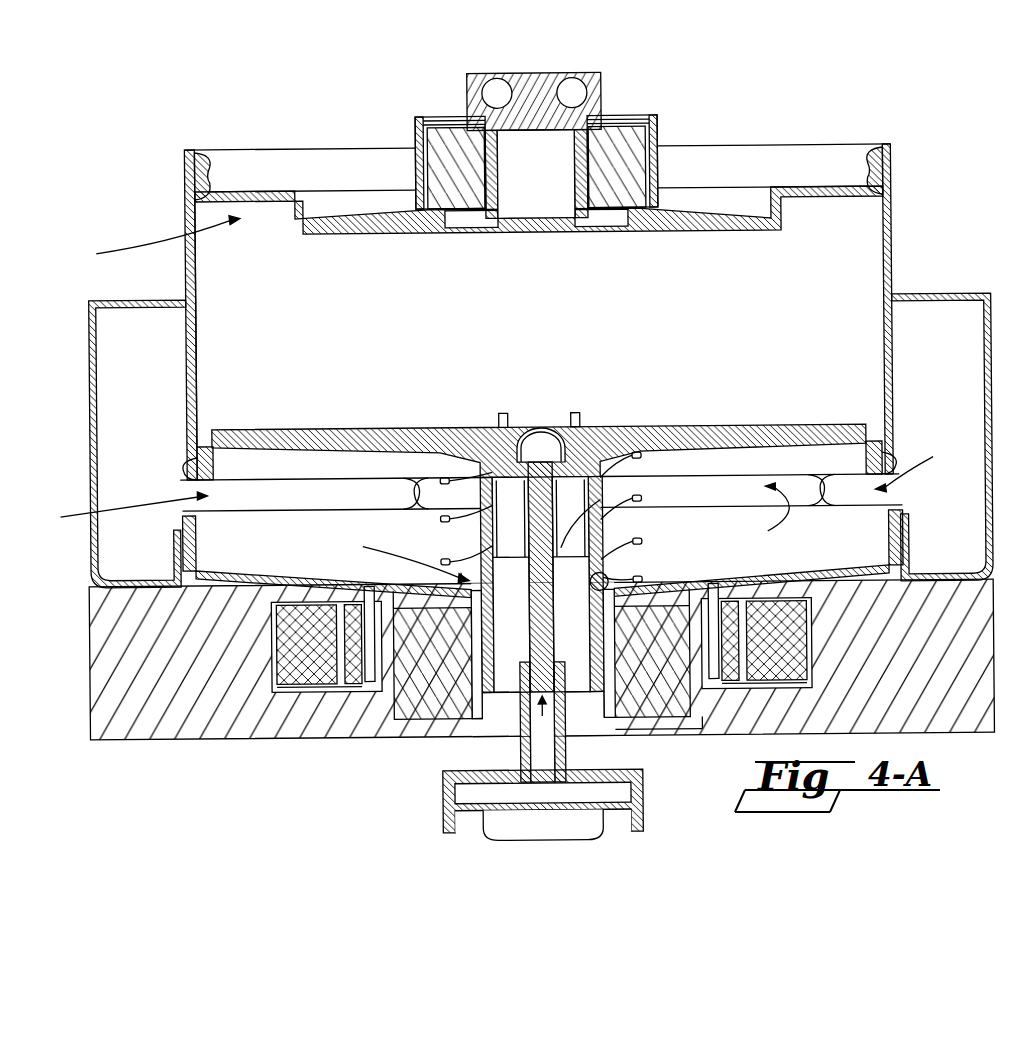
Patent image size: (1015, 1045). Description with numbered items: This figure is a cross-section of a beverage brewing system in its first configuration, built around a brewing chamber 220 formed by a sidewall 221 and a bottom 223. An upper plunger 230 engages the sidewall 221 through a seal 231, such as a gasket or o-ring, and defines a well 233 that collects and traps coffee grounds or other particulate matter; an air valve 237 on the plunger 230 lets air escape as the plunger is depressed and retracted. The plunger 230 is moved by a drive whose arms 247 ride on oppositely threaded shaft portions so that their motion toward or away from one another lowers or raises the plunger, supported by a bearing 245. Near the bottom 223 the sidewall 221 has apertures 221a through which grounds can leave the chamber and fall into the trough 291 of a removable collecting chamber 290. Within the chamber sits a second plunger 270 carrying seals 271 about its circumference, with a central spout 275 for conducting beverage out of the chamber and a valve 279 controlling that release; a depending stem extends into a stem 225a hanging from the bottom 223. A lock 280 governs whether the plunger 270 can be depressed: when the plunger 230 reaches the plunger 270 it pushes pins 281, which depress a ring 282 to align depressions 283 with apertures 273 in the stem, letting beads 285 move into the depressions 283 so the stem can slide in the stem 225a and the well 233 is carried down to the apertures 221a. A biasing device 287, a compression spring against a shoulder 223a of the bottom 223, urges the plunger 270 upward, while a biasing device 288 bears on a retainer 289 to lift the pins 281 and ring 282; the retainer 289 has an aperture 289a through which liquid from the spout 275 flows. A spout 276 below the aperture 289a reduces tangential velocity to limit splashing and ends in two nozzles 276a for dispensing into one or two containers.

The brewing chamber 220 is at (107, 316).
The sidewall 221 is at (185, 336).
The apertures 221a is at (491, 492).
The bottom 223 is at (213, 573).
The shoulder 223a is at (610, 580).
The stem 225a is at (455, 692).
The plunger 230 is at (481, 288).
The seal 231 is at (197, 178).
The well 233 is at (148, 239).
The air valve 237 is at (372, 236).
The bearing 245 is at (440, 146).
The arms 247 is at (862, 44).
The plunger 270 is at (458, 416).
The seals 271 is at (193, 449).
The apertures 273 is at (604, 638).
The spout 275 is at (505, 665).
The spout 276 is at (503, 808).
The nozzles 276a is at (600, 838).
The valve 279 is at (540, 426).
The lock 280 is at (396, 558).
The pins 281 is at (500, 417).
The ring 282 is at (643, 498).
The depressions 283 is at (490, 529).
The beads 285 is at (604, 561).
The biasing device 287 is at (602, 499).
The biasing device 288 is at (498, 641).
The retainer 289 is at (598, 693).
The aperture 289a is at (567, 737).
The collecting chamber 290 is at (92, 415).
The trough 291 is at (135, 527).